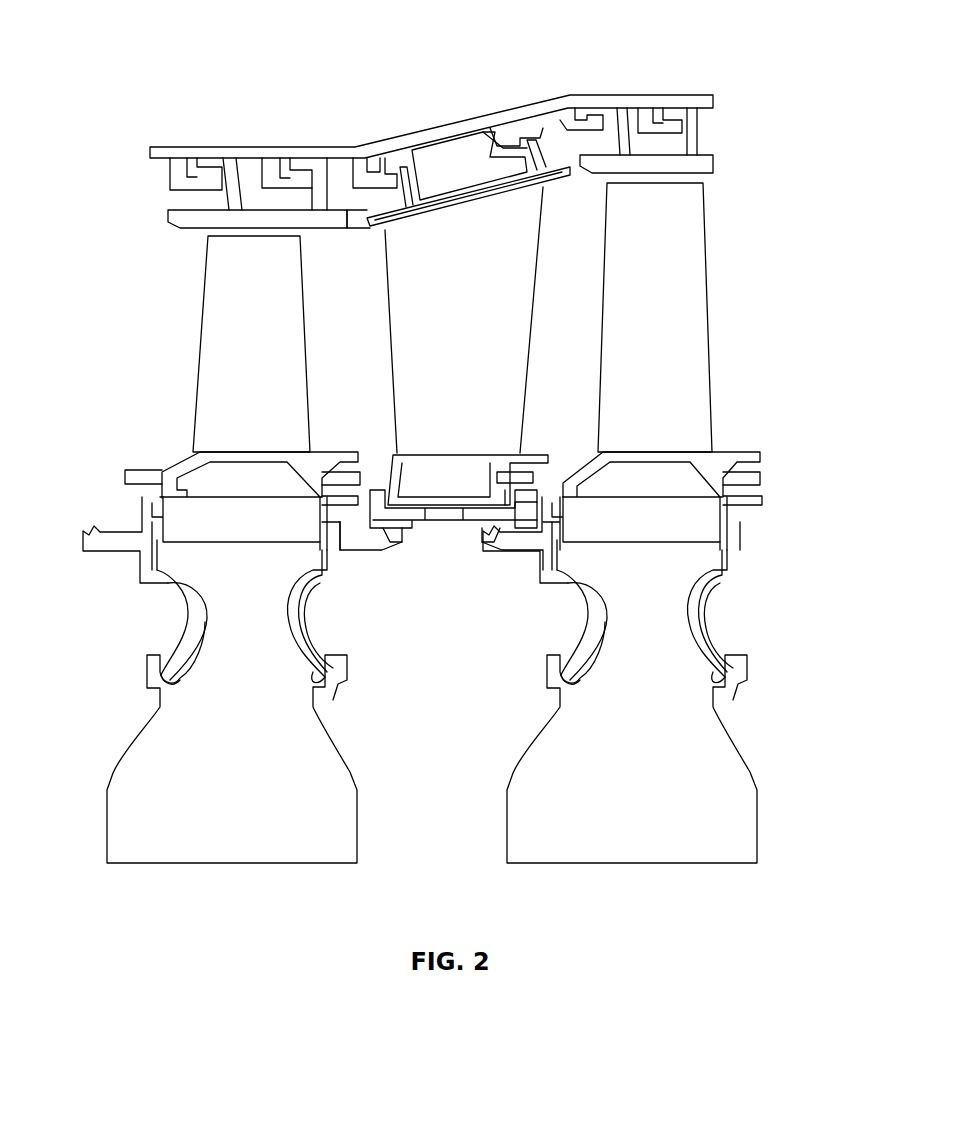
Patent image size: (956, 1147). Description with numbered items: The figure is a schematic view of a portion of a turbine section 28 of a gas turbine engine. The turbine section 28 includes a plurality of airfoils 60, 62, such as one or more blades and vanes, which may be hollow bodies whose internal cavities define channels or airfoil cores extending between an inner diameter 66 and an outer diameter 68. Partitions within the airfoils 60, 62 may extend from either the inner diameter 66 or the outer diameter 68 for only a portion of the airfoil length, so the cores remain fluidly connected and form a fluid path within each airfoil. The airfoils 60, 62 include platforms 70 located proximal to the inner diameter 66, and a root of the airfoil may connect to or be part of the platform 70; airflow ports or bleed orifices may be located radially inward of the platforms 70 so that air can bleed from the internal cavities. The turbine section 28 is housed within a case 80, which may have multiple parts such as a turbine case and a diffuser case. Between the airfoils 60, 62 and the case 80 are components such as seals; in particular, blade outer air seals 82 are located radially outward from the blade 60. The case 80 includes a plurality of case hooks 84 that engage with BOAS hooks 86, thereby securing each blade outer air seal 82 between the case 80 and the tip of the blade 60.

The turbine section 28 is at (118, 50).
The airfoil (blade) 60 is at (290, 278).
The airfoil (vane) 62 is at (508, 262).
The inner diameter 66 is at (322, 447).
The outer diameter 68 is at (168, 255).
The platform 70 is at (530, 451).
The case 80 is at (470, 128).
The blade outer air seal 82 is at (243, 215).
The case hook 84 is at (300, 178).
The BOAS hook 86 is at (227, 168).